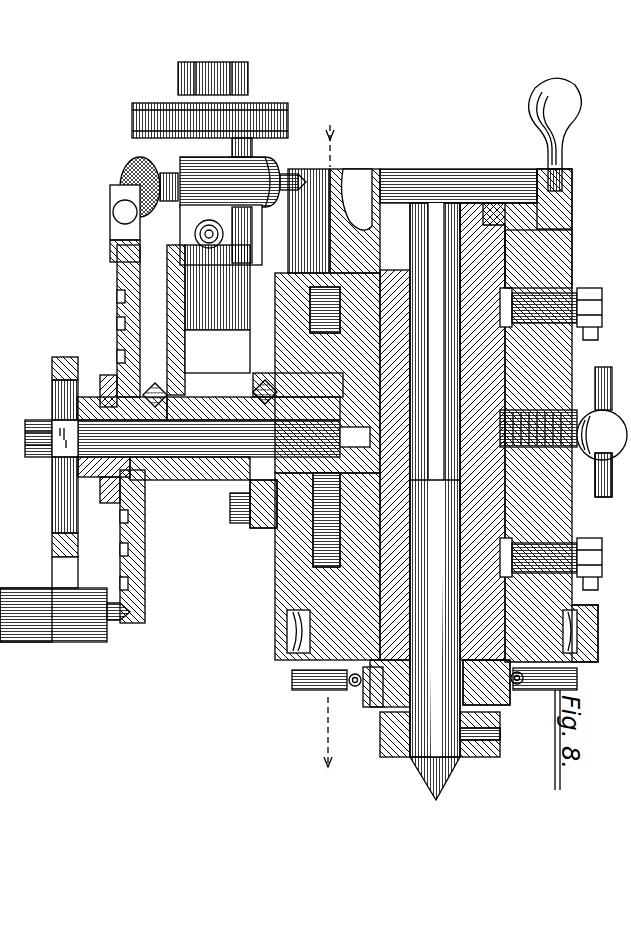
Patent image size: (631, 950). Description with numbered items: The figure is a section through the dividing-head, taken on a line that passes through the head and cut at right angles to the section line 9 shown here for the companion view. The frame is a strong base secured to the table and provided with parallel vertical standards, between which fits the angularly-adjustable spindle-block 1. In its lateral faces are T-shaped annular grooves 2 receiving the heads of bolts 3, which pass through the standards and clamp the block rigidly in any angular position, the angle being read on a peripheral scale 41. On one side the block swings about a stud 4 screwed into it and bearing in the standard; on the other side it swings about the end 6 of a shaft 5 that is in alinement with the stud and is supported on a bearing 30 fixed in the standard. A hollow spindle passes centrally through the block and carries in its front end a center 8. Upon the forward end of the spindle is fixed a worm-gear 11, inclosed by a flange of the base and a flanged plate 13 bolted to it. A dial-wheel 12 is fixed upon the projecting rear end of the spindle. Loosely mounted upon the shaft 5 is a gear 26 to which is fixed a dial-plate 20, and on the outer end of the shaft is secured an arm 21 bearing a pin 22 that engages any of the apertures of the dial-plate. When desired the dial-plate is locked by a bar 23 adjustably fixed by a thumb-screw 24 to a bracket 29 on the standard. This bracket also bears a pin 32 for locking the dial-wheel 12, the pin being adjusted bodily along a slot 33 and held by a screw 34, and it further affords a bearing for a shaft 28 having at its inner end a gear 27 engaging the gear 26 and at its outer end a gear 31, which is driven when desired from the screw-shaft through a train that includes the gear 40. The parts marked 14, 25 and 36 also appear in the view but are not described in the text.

The spindle-block 1 is at (567, 340).
The T-shaped annular grooves 2 is at (353, 258).
The bolts 3 is at (600, 312).
The stud 4 is at (627, 377).
The shaft 5 is at (110, 437).
The end of shaft 6 is at (328, 444).
The center 8 is at (452, 772).
The section line 9 is at (340, 452).
The worm-gear 11 is at (583, 652).
The dial-wheel 12 is at (565, 200).
The flanged plate 13 is at (335, 690).
The clamp plate 14 is at (567, 623).
The dial-plate 20 is at (128, 612).
The arm 21 is at (70, 643).
The pin 22 is at (15, 645).
The bar 23 is at (122, 236).
The thumb-screw 24 is at (117, 232).
The bracket foot 25 is at (117, 233).
The gear 26 is at (150, 482).
The gear 27 is at (170, 380).
The shaft 28 is at (190, 470).
The bracket 29 is at (182, 303).
The bearing 30 is at (245, 495).
The gear 31 is at (133, 122).
The pin 32 is at (127, 167).
The slot 33 is at (117, 283).
The screw 34 is at (193, 233).
The nut 36 is at (340, 535).
The gear 40 is at (545, 267).
The peripheral scale 41 is at (612, 465).